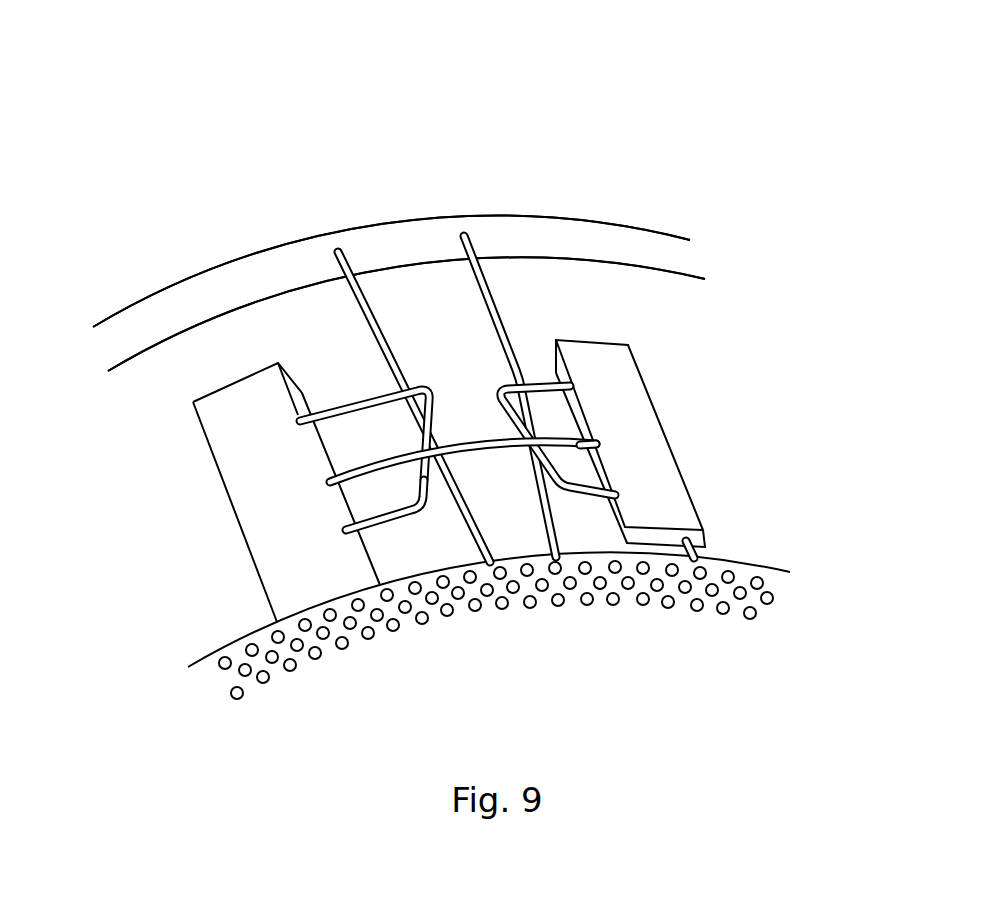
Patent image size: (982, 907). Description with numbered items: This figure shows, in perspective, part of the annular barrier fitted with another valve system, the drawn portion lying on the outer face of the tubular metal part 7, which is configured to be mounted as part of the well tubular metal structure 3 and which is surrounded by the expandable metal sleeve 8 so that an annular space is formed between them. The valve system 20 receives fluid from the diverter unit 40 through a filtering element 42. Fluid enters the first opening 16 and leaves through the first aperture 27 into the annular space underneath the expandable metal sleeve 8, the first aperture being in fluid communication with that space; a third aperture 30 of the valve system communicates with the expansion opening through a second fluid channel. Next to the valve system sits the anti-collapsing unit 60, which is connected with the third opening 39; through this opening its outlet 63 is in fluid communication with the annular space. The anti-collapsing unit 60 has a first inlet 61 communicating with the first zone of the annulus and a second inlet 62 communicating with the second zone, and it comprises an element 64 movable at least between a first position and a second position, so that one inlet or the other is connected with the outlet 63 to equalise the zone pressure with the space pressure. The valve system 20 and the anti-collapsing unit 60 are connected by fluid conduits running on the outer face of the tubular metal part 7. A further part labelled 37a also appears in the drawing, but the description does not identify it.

The well tubular metal structure 3 is at (142, 383).
The tubular metal part 7 is at (643, 297).
The expandable metal sleeve 8 is at (580, 173).
The first opening 16 is at (703, 530).
The valve system 20 is at (657, 453).
The first aperture 27 is at (613, 493).
The third aperture 30 is at (553, 385).
The support surface 37a is at (502, 447).
The third opening 39 is at (595, 449).
The diverter unit 40 is at (380, 637).
The filtering element 42 is at (696, 603).
The anti-collapsing unit 60 is at (230, 412).
The first inlet 61 is at (347, 530).
The second inlet 62 is at (305, 422).
The outlet 63 is at (332, 483).
The element 64 is at (447, 399).